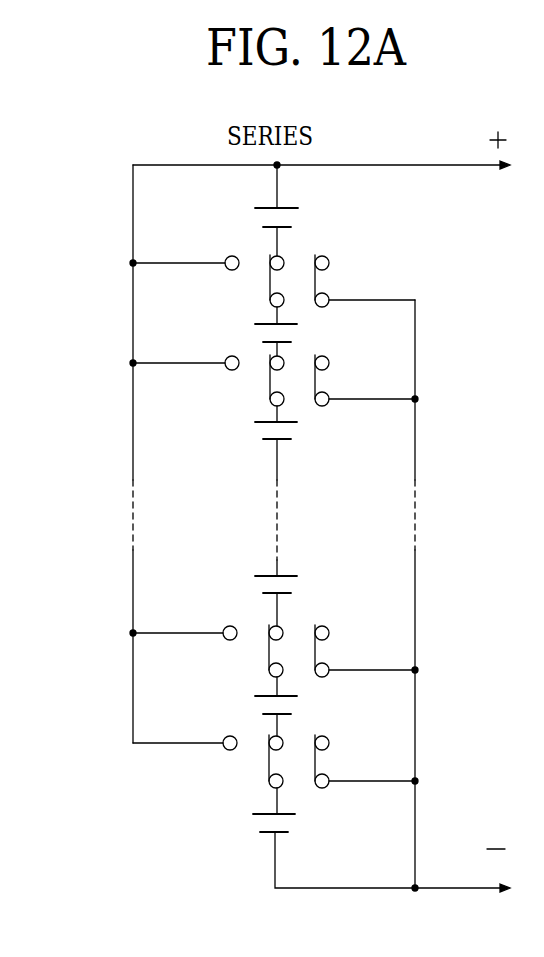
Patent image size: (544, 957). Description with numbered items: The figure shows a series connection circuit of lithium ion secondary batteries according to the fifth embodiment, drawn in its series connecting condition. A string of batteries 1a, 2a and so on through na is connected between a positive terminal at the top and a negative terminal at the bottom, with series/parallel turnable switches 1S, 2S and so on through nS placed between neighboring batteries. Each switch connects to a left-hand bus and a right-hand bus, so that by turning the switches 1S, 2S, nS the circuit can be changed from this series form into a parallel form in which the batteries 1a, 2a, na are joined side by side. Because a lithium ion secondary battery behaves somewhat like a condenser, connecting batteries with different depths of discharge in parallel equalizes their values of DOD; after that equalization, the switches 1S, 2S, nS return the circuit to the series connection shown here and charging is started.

The battery 1a is at (302, 213).
The battery 2a is at (298, 331).
The battery na is at (296, 825).
The series/parallel turnable switch 1S is at (255, 277).
The series/parallel turnable switch 2S is at (255, 386).
The series/parallel turnable switch nS is at (253, 755).